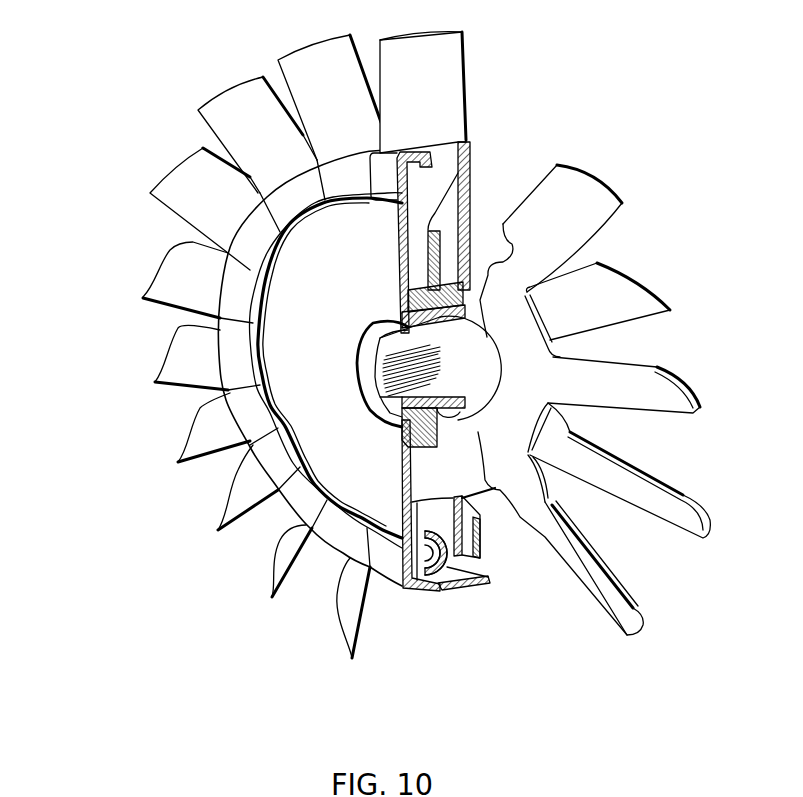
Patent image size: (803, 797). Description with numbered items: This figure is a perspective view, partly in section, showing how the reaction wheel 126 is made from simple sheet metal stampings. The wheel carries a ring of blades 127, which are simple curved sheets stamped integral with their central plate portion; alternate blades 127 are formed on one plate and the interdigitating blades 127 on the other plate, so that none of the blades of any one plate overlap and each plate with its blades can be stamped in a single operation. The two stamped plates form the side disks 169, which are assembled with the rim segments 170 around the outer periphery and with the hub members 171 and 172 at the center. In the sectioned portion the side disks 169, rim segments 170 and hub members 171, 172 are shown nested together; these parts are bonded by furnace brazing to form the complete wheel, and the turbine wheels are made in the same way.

The reaction wheel 126 is at (118, 343).
The blades 127 is at (447, 77).
The side disks 169 is at (350, 272).
The rim segments 170 is at (360, 186).
The hub member 171 is at (403, 292).
The hub member 172 is at (375, 331).